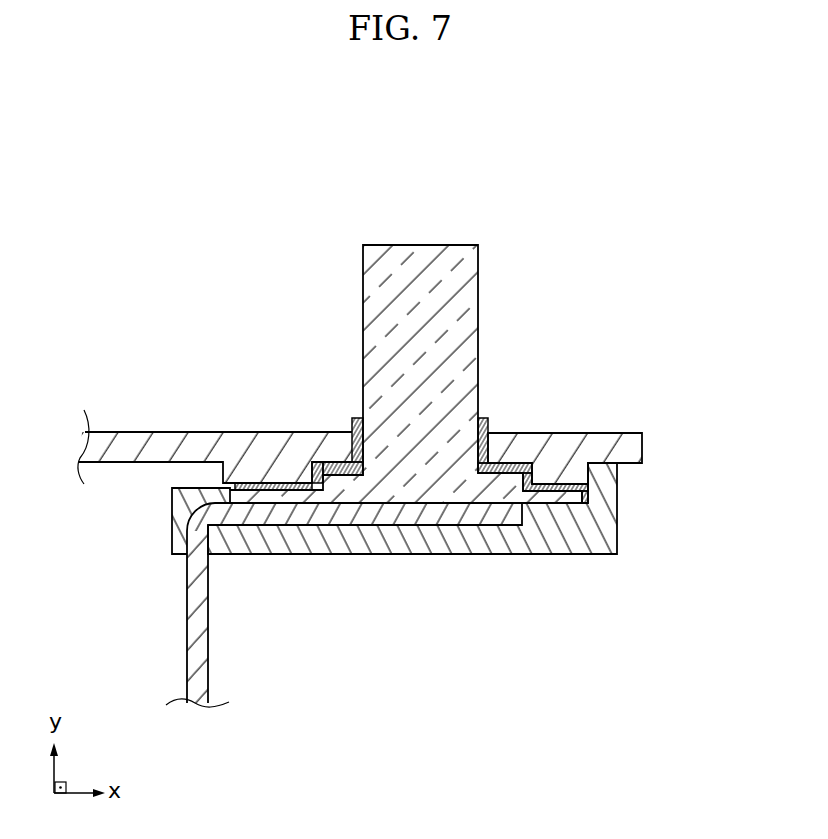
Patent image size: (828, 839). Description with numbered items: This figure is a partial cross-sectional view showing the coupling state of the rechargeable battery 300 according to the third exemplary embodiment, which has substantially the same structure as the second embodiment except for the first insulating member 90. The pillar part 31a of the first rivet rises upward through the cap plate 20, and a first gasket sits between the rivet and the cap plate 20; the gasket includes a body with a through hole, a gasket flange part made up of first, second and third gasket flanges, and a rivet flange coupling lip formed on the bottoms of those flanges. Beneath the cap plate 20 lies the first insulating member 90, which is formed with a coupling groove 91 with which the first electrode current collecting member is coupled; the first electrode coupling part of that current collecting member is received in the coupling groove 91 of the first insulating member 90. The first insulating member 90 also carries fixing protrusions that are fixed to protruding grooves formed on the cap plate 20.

The rechargeable battery 300 is at (623, 221).
The cap plate 20 is at (608, 423).
The pillar part 31a is at (468, 290).
The first insulating member 90 is at (609, 570).
The coupling groove 91 is at (283, 525).